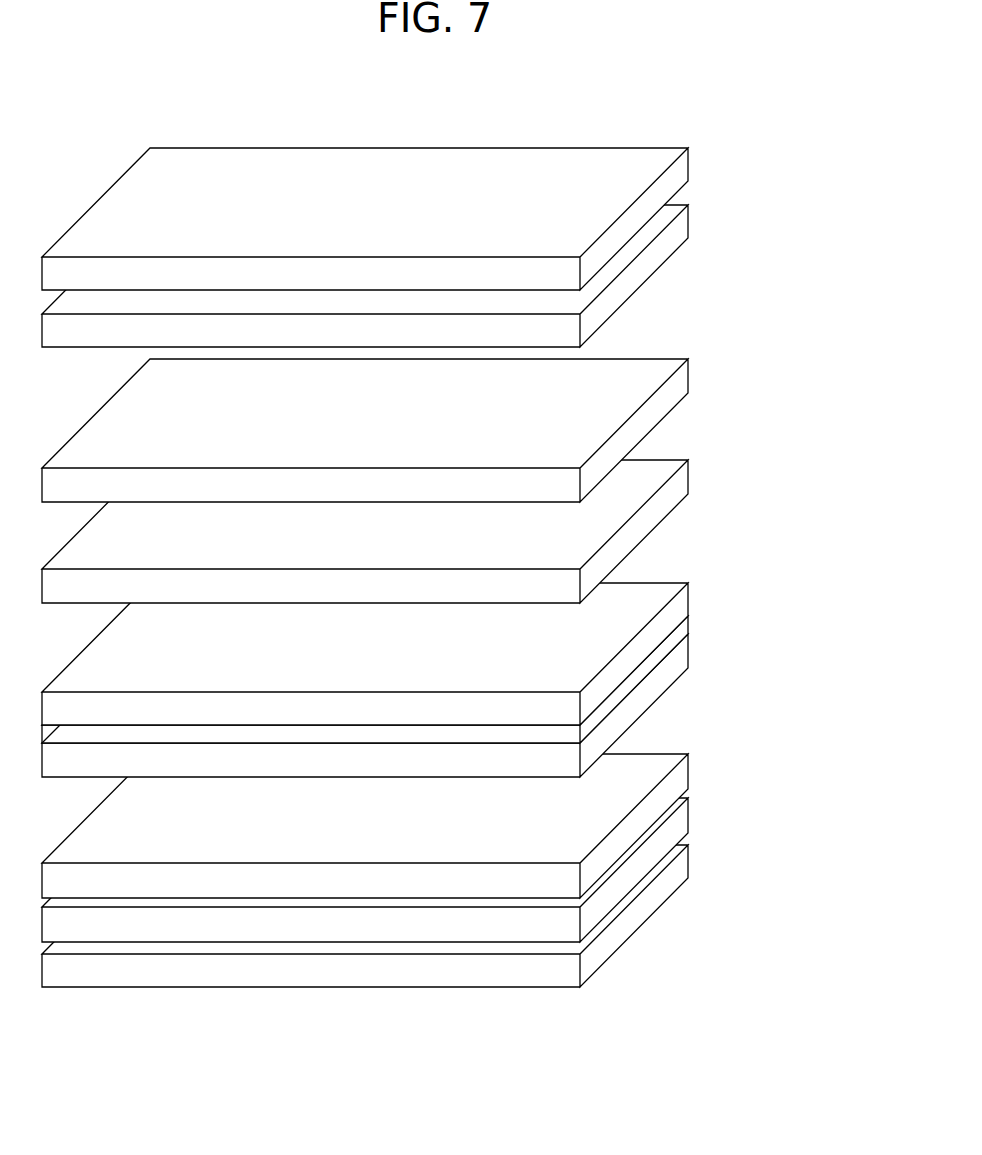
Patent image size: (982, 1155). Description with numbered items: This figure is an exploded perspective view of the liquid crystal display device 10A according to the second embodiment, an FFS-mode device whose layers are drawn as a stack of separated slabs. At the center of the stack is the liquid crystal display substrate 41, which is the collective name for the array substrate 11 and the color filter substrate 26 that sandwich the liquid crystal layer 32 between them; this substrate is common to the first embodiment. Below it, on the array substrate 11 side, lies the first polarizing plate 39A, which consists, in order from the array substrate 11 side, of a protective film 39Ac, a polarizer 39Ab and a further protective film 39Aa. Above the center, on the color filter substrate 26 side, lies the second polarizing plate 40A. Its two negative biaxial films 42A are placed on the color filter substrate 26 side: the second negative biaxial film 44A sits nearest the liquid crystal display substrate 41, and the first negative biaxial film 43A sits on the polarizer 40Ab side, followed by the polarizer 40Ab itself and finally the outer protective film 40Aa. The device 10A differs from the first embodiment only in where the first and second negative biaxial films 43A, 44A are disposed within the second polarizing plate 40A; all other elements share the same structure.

The liquid crystal display device 10A is at (544, 97).
The second polarizing plate 40A is at (476, 365).
The protective film 40Aa is at (421, 212).
The polarizer 40Ab is at (676, 237).
The negative biaxial films 42A is at (446, 468).
The first negative biaxial film 43A is at (792, 468).
The second negative biaxial film 44A is at (676, 485).
The liquid crystal display substrate 41 is at (431, 669).
The color filter substrate 26 is at (676, 610).
The liquid crystal layer 32 is at (676, 637).
The array substrate 11 is at (676, 665).
The first polarizing plate 39A is at (451, 861).
The protective film 39Ac is at (676, 780).
The polarizer 39Ab is at (676, 824).
The protective film 39Aa is at (676, 869).